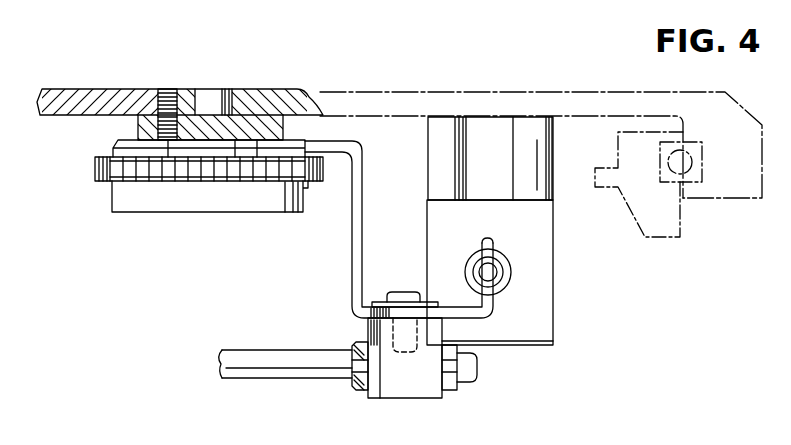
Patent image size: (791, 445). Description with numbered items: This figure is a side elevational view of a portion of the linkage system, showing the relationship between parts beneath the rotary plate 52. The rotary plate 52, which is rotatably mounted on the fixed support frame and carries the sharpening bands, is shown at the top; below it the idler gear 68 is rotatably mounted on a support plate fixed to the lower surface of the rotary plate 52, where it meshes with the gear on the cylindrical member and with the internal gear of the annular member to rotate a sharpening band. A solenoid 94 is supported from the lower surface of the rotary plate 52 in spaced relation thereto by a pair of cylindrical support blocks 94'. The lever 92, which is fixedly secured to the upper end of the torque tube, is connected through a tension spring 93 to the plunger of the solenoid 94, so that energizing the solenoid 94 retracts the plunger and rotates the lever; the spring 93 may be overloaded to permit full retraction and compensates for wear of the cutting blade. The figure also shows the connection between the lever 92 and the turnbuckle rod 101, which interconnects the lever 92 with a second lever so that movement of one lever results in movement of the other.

The rotary plate 52 is at (56, 119).
The idler gear 68 is at (93, 184).
The lever 92 is at (352, 235).
The tension spring 93 is at (499, 270).
The solenoid 94 is at (515, 272).
The cylindrical support blocks 94' is at (492, 167).
The turnbuckle rod 101 is at (332, 380).